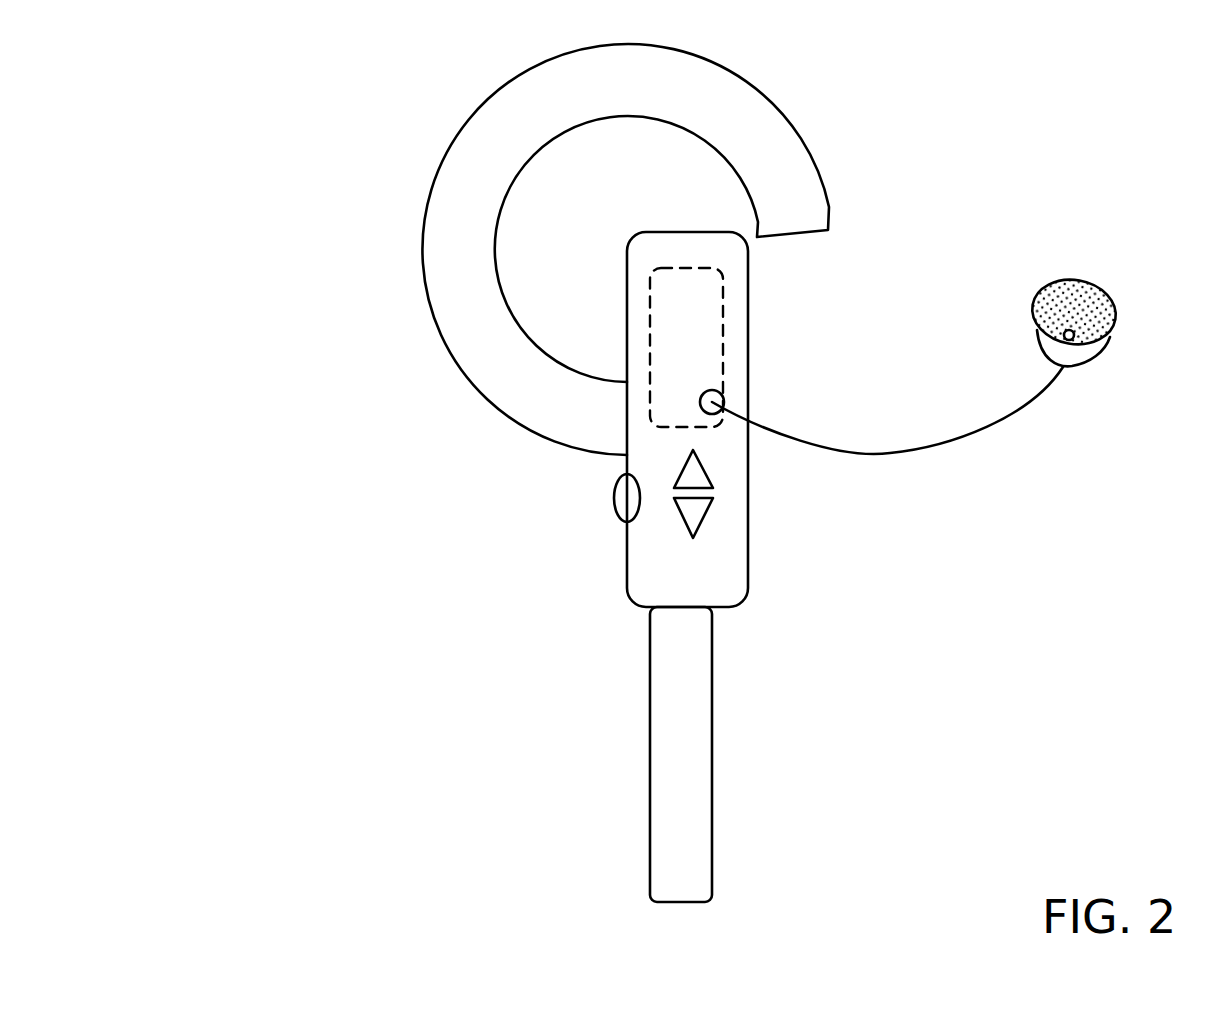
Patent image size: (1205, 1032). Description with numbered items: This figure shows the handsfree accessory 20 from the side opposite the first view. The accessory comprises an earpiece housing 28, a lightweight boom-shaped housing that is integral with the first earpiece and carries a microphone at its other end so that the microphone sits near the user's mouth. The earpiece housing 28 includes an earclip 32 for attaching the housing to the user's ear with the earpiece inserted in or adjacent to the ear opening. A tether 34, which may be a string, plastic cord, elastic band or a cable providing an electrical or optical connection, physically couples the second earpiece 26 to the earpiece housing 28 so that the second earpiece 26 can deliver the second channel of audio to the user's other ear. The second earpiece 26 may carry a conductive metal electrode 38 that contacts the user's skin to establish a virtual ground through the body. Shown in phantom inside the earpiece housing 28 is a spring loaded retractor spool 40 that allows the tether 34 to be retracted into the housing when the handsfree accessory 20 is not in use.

The handsfree accessory 20 is at (715, 464).
The second earpiece 26 is at (1110, 320).
The earpiece housing 28 is at (565, 560).
The earclip 32 is at (553, 63).
The tether 34 is at (927, 452).
The conductive metal electrode 38 is at (1072, 340).
The spring loaded retractor spool 40 is at (722, 333).